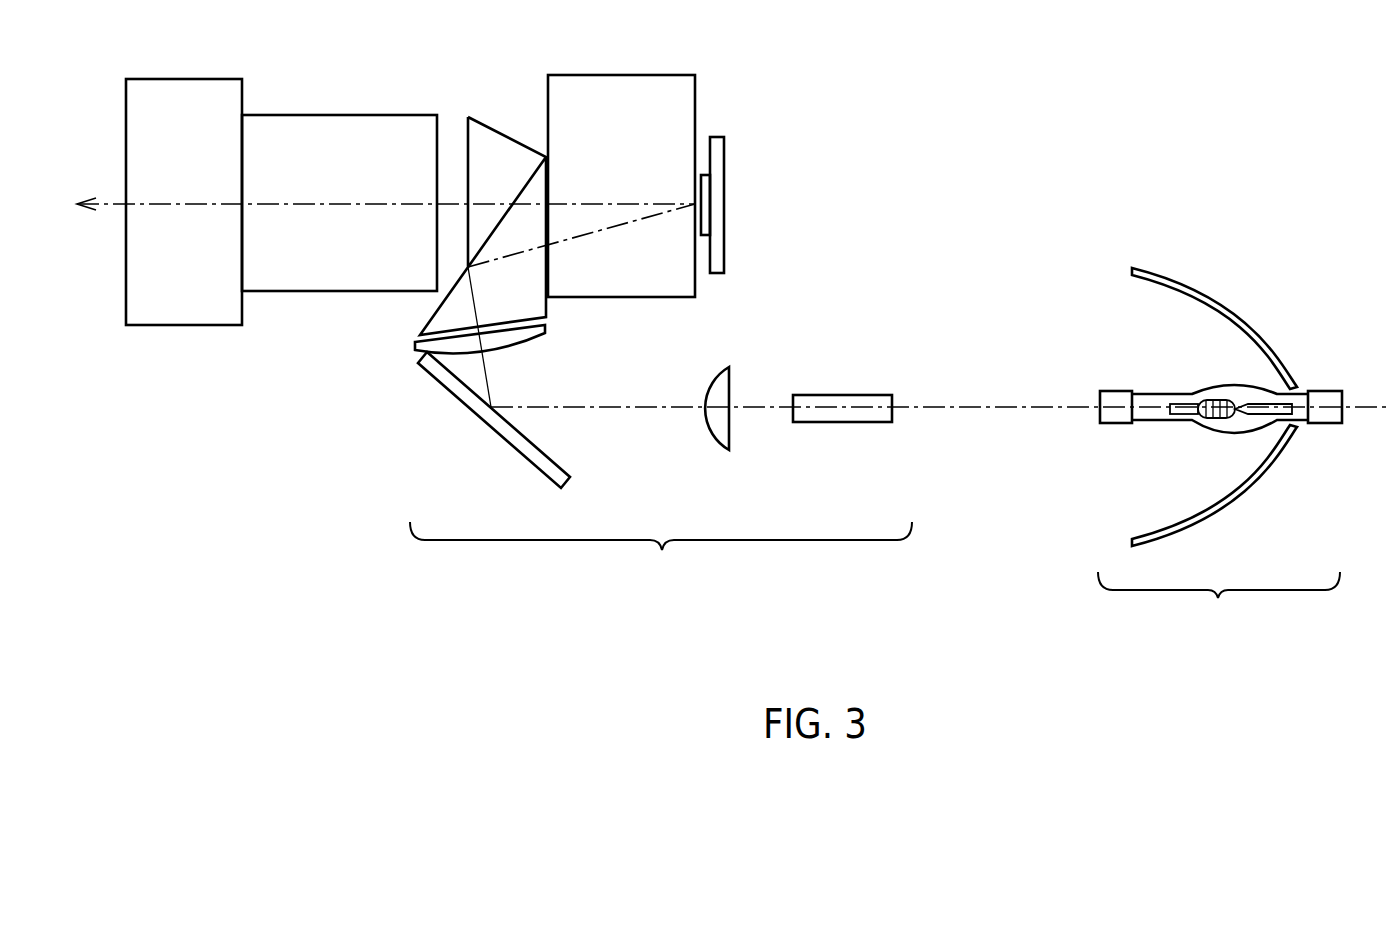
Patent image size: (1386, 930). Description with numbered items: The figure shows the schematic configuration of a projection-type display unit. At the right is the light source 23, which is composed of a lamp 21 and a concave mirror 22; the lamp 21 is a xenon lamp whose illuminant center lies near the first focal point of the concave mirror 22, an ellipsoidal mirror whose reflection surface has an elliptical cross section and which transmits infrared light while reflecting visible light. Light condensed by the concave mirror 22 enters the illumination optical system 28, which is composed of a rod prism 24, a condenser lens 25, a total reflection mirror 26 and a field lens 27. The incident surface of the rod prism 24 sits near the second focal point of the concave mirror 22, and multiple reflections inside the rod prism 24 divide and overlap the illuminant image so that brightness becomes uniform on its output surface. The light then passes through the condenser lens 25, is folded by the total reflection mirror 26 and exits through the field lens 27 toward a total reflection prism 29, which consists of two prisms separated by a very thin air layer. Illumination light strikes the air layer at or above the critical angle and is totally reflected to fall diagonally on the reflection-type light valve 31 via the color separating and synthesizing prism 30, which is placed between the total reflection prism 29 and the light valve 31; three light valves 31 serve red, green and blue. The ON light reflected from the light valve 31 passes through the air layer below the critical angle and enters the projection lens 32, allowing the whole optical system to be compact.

The lamp 21 is at (1303, 391).
The concave mirror 22 is at (1215, 297).
The light source 23 is at (1219, 604).
The rod prism 24 is at (848, 395).
The condenser lens 25 is at (733, 452).
The total reflection mirror 26 is at (485, 422).
The field lens 27 is at (415, 345).
The illumination optical system 28 is at (661, 554).
The total reflection prism 29 is at (502, 134).
The color separating and synthesizing prism 30 is at (606, 75).
The light valve 31 is at (725, 183).
The projection lens 32 is at (185, 325).